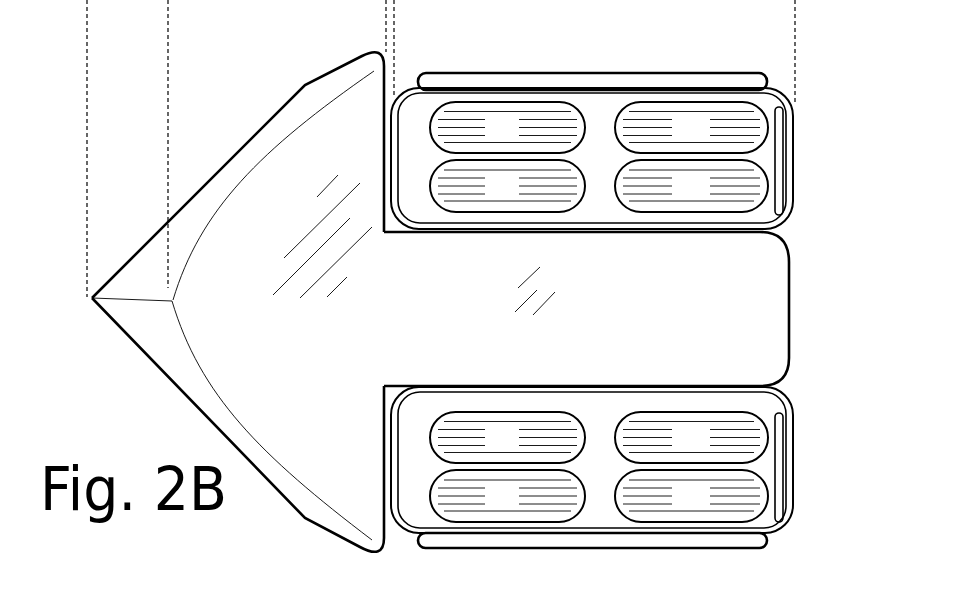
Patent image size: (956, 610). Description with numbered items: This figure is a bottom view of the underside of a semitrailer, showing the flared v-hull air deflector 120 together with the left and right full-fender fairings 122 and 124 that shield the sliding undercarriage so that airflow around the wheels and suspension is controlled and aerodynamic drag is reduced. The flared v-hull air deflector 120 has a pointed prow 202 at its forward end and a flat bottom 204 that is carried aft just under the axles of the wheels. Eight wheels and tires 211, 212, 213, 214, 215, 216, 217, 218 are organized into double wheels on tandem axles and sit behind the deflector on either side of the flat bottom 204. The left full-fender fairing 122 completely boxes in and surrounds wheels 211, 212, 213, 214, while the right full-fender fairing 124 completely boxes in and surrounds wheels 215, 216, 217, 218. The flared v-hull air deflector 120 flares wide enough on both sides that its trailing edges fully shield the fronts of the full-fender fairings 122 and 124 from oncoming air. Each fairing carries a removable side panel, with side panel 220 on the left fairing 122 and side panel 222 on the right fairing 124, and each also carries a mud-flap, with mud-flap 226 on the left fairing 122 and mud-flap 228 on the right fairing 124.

The flared v-hull air deflector 120 is at (112, 319).
The pointed prow 202 is at (137, 332).
The flat bottom 204 is at (398, 322).
The left full-fender fairing 122 is at (587, 163).
The right full-fender fairing 124 is at (585, 477).
The wheel and tire 211 is at (490, 136).
The wheel and tire 212 is at (680, 136).
The wheel and tire 213 is at (490, 196).
The wheel and tire 214 is at (680, 192).
The wheel and tire 215 is at (490, 444).
The wheel and tire 216 is at (676, 444).
The wheel and tire 217 is at (490, 502).
The wheel and tire 218 is at (680, 502).
The removable side panel 220 is at (583, 73).
The removable side panel 222 is at (567, 541).
The mud-flap 226 is at (782, 130).
The mud-flap 228 is at (779, 440).